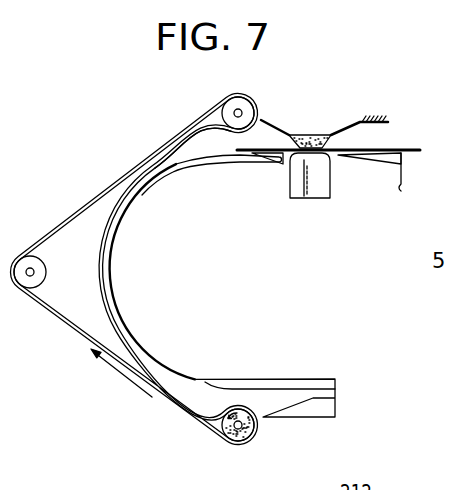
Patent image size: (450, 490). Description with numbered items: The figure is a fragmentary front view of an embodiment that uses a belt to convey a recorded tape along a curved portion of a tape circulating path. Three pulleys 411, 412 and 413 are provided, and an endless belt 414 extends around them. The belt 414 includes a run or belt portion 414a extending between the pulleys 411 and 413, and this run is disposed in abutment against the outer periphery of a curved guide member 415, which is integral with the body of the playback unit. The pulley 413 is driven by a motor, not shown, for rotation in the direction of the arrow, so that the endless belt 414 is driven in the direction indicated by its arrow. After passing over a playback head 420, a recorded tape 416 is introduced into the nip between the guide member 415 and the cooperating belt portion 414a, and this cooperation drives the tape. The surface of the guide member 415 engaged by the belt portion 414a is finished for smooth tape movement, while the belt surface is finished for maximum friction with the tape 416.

The pulley 411 is at (253, 100).
The pulley 412 is at (55, 266).
The pulley 413 is at (256, 431).
The endless belt 414 is at (53, 230).
The belt portion 414a is at (203, 144).
The curved guide member 415 is at (113, 248).
The recorded tape 416 is at (412, 148).
The playback head 420 is at (327, 182).